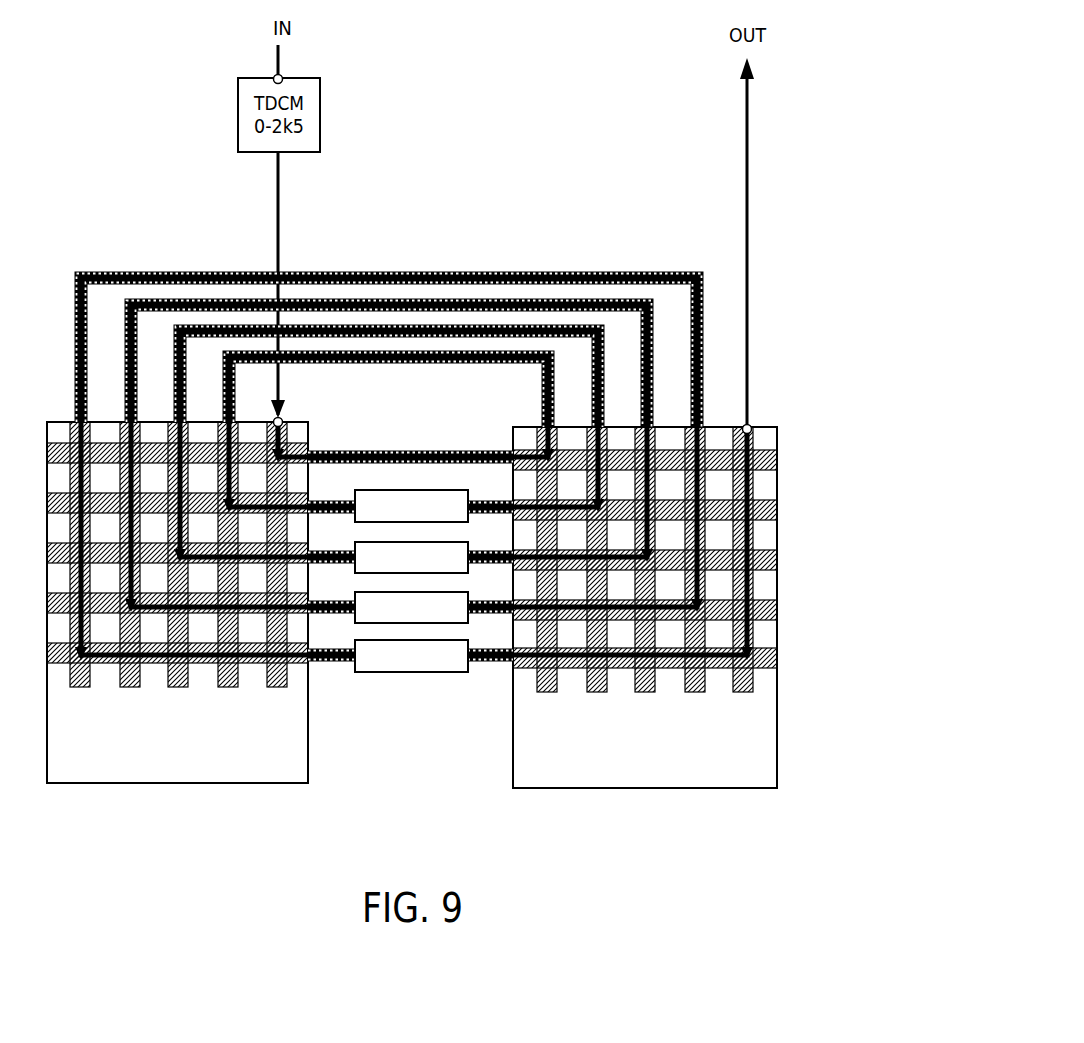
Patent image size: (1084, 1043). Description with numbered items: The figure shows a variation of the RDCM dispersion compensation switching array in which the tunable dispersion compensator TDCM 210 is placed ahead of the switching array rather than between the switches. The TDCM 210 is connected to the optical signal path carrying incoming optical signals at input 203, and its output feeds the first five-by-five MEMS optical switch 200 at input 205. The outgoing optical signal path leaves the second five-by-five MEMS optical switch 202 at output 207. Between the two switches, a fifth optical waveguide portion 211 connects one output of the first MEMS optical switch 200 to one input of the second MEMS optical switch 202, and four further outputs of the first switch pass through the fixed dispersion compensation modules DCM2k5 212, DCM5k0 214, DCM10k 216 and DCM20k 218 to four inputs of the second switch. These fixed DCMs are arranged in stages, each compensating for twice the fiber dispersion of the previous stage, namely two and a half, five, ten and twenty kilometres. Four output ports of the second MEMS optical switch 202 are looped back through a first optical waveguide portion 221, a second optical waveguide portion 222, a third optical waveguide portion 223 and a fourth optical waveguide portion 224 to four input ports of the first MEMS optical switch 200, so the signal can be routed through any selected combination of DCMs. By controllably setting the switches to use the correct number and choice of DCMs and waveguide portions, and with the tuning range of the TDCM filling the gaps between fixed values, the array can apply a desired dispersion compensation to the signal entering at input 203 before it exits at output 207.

The first MEMS optical switch 200 is at (197, 772).
The second MEMS optical switch 202 is at (663, 778).
The input 203 is at (284, 75).
The input 205 is at (283, 417).
The output 207 is at (751, 425).
The tunable dispersion compensator TDCM 0–2k5 210 is at (282, 152).
The fifth optical waveguide portion 211 is at (422, 450).
The DCM2k5 212 is at (388, 490).
The DCM5k0 214 is at (388, 542).
The DCM10k 216 is at (388, 592).
The DCM20k 218 is at (388, 640).
The first optical waveguide portion 221 is at (400, 350).
The second optical waveguide portion 222 is at (457, 325).
The third optical waveguide portion 223 is at (513, 298).
The fourth optical waveguide portion 224 is at (572, 271).